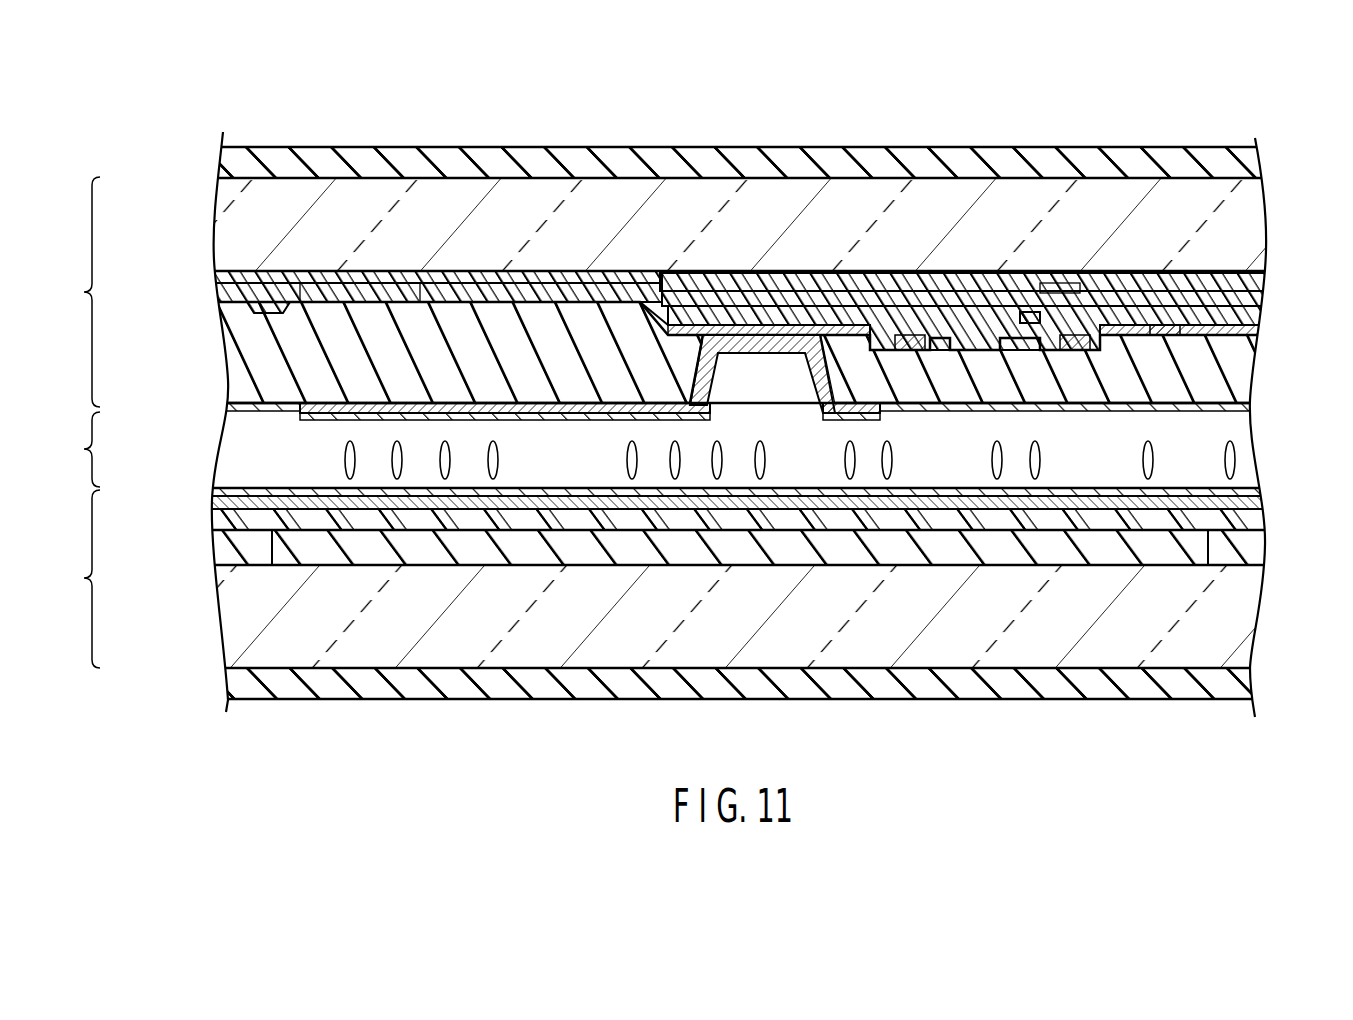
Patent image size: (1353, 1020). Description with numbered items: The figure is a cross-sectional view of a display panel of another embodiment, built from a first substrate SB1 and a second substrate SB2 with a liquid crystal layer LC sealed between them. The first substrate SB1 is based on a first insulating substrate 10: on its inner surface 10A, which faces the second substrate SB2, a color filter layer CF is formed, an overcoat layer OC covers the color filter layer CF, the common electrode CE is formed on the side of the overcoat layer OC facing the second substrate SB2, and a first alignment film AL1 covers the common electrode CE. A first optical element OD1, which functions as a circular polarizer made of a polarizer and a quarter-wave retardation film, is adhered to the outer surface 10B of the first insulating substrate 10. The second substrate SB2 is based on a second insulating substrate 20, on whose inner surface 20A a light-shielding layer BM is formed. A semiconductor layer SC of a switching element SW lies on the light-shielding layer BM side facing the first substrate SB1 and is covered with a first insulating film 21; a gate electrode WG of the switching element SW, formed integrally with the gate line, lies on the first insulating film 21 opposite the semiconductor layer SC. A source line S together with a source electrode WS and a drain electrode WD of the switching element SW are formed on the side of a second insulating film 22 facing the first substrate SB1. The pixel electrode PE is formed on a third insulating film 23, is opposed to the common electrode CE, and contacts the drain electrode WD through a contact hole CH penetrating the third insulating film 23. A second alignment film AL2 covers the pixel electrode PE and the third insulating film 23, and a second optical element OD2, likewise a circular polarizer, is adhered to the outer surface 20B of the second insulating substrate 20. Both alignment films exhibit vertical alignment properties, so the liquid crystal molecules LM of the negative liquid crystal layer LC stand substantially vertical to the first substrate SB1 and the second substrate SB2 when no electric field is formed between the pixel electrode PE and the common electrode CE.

The outer surface of the second insulating substrate 20B is at (284, 166).
The inner surface of the second insulating substrate 20A is at (355, 284).
The second optical element OD2 is at (228, 157).
The second substrate SB2 is at (70, 292).
The source line S is at (260, 310).
The liquid crystal layer LC is at (74, 449).
The common electrode CE is at (275, 502).
The overcoat layer OC is at (228, 516).
The inner surface of the first insulating substrate 10A is at (224, 548).
The first substrate SB1 is at (70, 579).
The first optical element OD1 is at (228, 681).
The outer surface of the first insulating substrate 10B is at (287, 676).
The gate electrode WG is at (1013, 323).
The semiconductor layer SC is at (1032, 300).
The switching element SW is at (1061, 279).
The second insulating substrate 20 is at (1254, 216).
The light-shielding layer BM is at (1248, 286).
The first insulating film 21 is at (1240, 301).
The second insulating film 22 is at (1240, 322).
The third insulating film 23 is at (1237, 381).
The second alignment film AL2 is at (1228, 410).
The first alignment film AL1 is at (1247, 490).
The color filter layer CF is at (1262, 553).
The first insulating substrate 10 is at (1240, 634).
The contact hole CH is at (735, 405).
The pixel electrode PE is at (540, 414).
The liquid crystal molecules LM is at (845, 460).
The drain electrode WD is at (910, 350).
The source electrode WS is at (1085, 350).